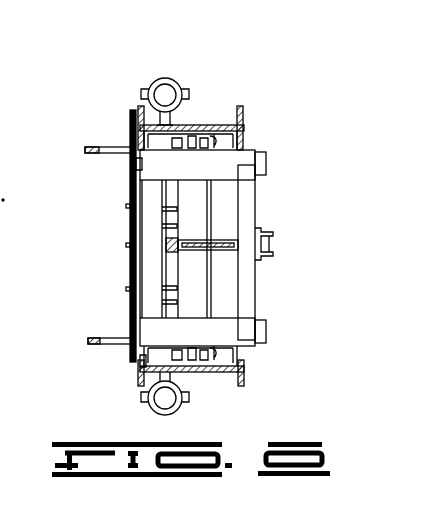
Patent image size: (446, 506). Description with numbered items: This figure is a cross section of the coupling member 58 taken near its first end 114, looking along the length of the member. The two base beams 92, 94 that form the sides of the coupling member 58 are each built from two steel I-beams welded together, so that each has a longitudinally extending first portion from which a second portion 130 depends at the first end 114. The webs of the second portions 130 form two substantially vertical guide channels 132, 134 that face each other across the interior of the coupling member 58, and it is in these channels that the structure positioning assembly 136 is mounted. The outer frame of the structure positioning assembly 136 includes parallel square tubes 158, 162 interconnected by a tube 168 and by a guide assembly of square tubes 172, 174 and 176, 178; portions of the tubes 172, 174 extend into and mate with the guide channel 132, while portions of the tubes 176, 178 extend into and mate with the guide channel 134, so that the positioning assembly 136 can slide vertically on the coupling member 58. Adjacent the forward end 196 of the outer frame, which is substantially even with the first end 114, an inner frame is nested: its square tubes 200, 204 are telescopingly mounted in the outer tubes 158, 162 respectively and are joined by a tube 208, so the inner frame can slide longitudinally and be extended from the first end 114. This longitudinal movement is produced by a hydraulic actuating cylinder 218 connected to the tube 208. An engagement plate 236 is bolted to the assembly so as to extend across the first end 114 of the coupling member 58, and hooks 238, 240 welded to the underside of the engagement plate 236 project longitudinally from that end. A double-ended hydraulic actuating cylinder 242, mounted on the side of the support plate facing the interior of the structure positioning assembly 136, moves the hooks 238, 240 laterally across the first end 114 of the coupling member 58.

The coupling member 58 is at (258, 92).
The base beam 92 is at (247, 383).
The base beam 94 is at (244, 142).
The first end 114 is at (134, 384).
The second portion 130 is at (243, 118).
The guide channel 132 is at (223, 368).
The guide channel 134 is at (221, 128).
The structure positioning assembly 136 is at (127, 264).
The square tube 158 is at (157, 324).
The square tube 162 is at (160, 172).
The tube 168 is at (256, 298).
The square tube 172 is at (140, 360).
The square tube 174 is at (245, 352).
The square tube 176 is at (150, 125).
The square tube 178 is at (236, 134).
The forward end 196 is at (129, 161).
The square tube 200 is at (267, 325).
The square tube 204 is at (266, 165).
The tube 208 is at (150, 204).
The hydraulic actuating cylinder 218 is at (218, 240).
The engagement plate 236 is at (127, 289).
The hook 238 is at (115, 338).
The hook 240 is at (110, 148).
The double-ended hydraulic actuating cylinder 242 is at (165, 237).